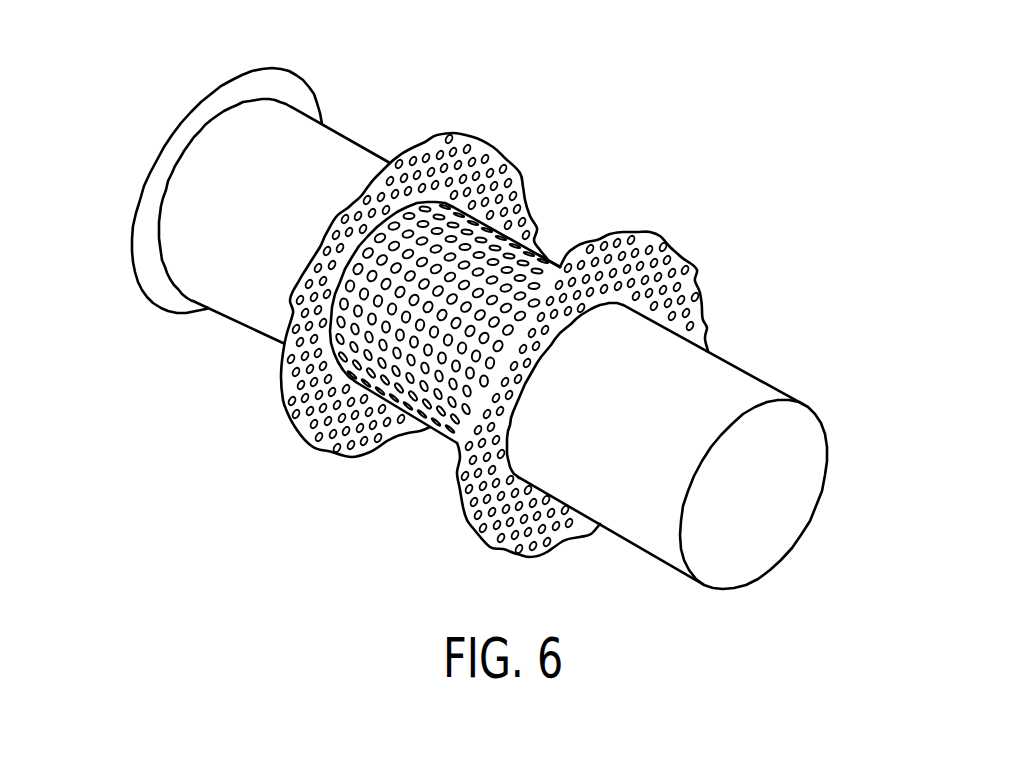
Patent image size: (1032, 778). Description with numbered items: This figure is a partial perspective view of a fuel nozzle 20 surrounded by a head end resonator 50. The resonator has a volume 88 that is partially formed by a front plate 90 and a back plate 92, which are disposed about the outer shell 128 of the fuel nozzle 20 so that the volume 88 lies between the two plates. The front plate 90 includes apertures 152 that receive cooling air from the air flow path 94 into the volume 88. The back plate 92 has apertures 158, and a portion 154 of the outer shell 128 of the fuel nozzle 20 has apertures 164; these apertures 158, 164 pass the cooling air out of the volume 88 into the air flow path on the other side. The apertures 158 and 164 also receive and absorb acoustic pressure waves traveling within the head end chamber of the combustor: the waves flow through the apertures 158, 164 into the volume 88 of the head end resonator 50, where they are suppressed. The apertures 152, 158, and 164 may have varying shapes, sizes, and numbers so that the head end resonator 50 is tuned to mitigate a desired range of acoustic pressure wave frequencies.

The fuel nozzle 20 is at (918, 220).
The head end resonator 50 is at (545, 207).
The volume 88 is at (443, 473).
The front plate 90 is at (693, 281).
The back plate 92 is at (472, 140).
The air flow path 94 is at (777, 358).
The outer shell 128 is at (757, 392).
The apertures 152 is at (658, 248).
The portion 154 is at (540, 254).
The apertures 158 is at (433, 180).
The apertures 164 is at (423, 432).